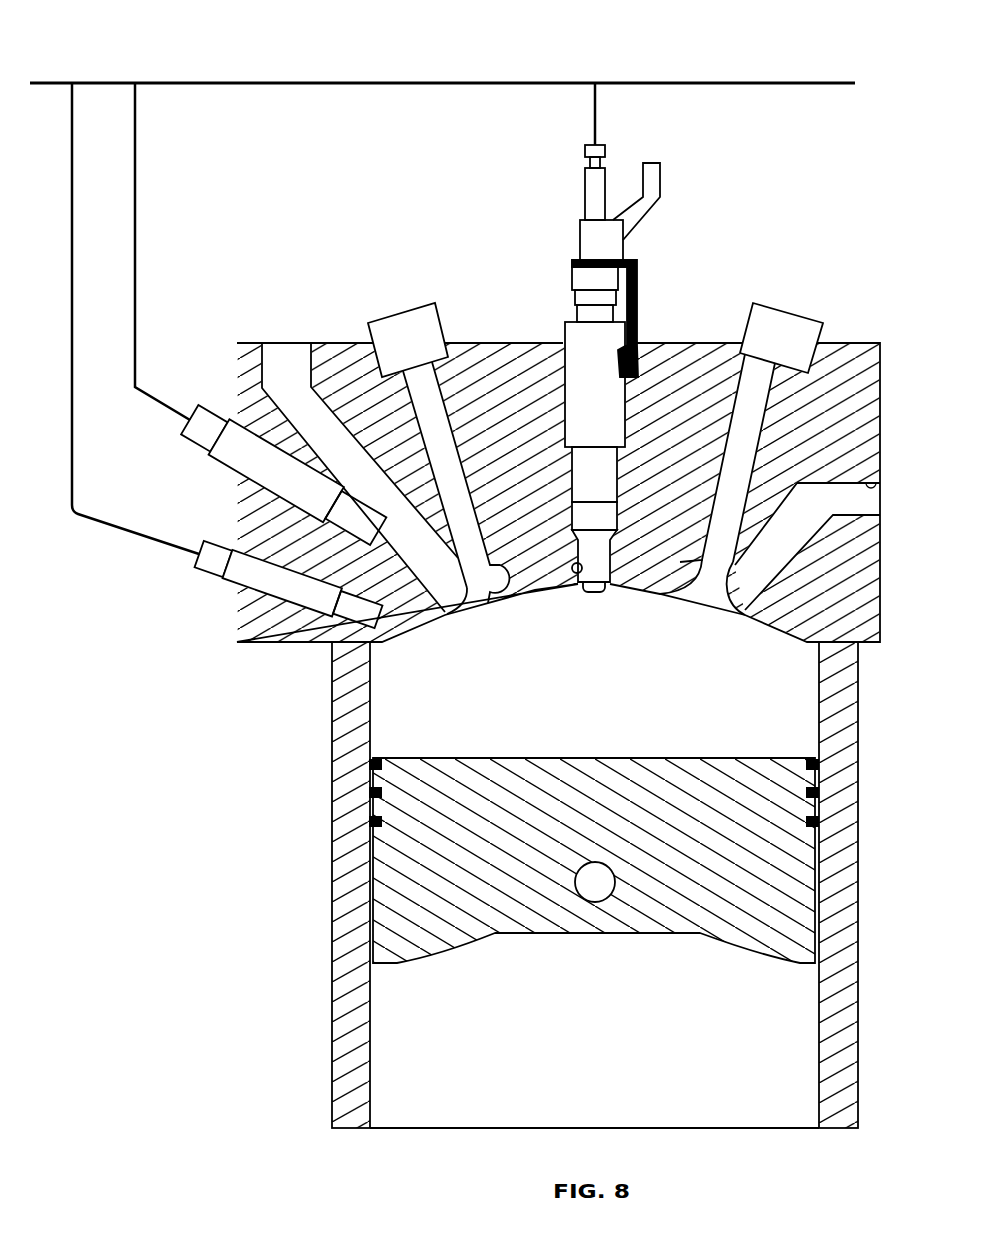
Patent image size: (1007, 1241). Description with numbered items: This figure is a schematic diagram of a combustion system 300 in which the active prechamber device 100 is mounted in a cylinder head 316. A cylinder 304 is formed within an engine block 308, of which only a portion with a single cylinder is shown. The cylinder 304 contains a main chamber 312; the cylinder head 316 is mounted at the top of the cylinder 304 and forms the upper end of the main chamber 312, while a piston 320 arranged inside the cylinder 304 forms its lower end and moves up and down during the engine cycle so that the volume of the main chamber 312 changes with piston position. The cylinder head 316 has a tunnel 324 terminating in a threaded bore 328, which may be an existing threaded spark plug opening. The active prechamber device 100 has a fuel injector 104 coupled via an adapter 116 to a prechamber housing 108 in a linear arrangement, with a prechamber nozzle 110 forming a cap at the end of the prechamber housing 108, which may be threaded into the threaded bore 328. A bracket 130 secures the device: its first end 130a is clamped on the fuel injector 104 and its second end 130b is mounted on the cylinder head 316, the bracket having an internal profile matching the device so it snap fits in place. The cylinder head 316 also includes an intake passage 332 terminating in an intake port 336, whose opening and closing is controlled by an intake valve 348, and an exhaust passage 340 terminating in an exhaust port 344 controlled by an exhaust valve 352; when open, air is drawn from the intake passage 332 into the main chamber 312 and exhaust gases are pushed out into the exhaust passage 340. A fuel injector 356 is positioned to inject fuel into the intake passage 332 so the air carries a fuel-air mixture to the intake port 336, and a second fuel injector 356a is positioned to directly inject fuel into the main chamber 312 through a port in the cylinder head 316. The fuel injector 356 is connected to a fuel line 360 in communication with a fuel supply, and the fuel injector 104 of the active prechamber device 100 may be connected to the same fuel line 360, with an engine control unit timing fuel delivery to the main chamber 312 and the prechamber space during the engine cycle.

The combustion system 300 is at (497, 76).
The fuel line 360 is at (240, 83).
The active prechamber device 100 is at (583, 198).
The fuel injector 104 is at (580, 250).
The bracket 130 is at (637, 263).
The first end 130a is at (572, 263).
The second end 130b is at (639, 377).
The tunnel 324 is at (640, 330).
The adapter 116 is at (563, 334).
The prechamber housing 108 is at (600, 573).
The prechamber nozzle 110 is at (595, 593).
The threaded bore 328 is at (575, 580).
The cylinder head 316 is at (882, 583).
The intake passage 332 is at (302, 343).
The intake valve 348 is at (432, 383).
The intake port 336 is at (447, 614).
The exhaust valve 352 is at (773, 378).
The exhaust port 344 is at (745, 617).
The exhaust passage 340 is at (880, 484).
The fuel injector 356 is at (225, 457).
The second fuel injector 356a is at (233, 580).
The main chamber 312 is at (605, 716).
The engine block 308 is at (330, 746).
The cylinder 304 is at (857, 857).
The piston 320 is at (818, 898).